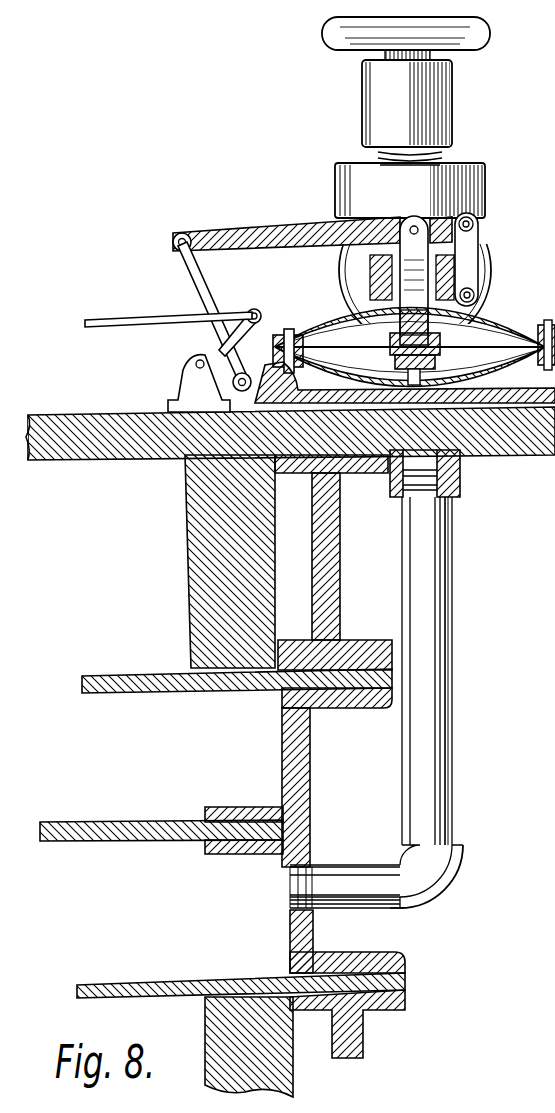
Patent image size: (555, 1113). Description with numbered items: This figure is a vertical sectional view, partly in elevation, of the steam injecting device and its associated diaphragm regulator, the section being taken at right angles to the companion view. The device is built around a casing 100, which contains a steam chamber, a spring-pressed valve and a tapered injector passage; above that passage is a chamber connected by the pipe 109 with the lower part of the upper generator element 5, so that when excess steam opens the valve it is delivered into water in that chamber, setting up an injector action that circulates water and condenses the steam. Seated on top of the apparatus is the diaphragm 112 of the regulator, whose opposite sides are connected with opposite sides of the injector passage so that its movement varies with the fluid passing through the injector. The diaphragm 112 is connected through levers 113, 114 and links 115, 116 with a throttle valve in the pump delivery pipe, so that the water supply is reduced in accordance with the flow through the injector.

The upper generator element 5 is at (304, 766).
The casing 100 is at (488, 252).
The pipe 109 is at (452, 566).
The diaphragm 112 is at (472, 343).
The lever 113 is at (283, 243).
The lever 114 is at (238, 326).
The link 115 is at (197, 281).
The link 116 is at (115, 320).